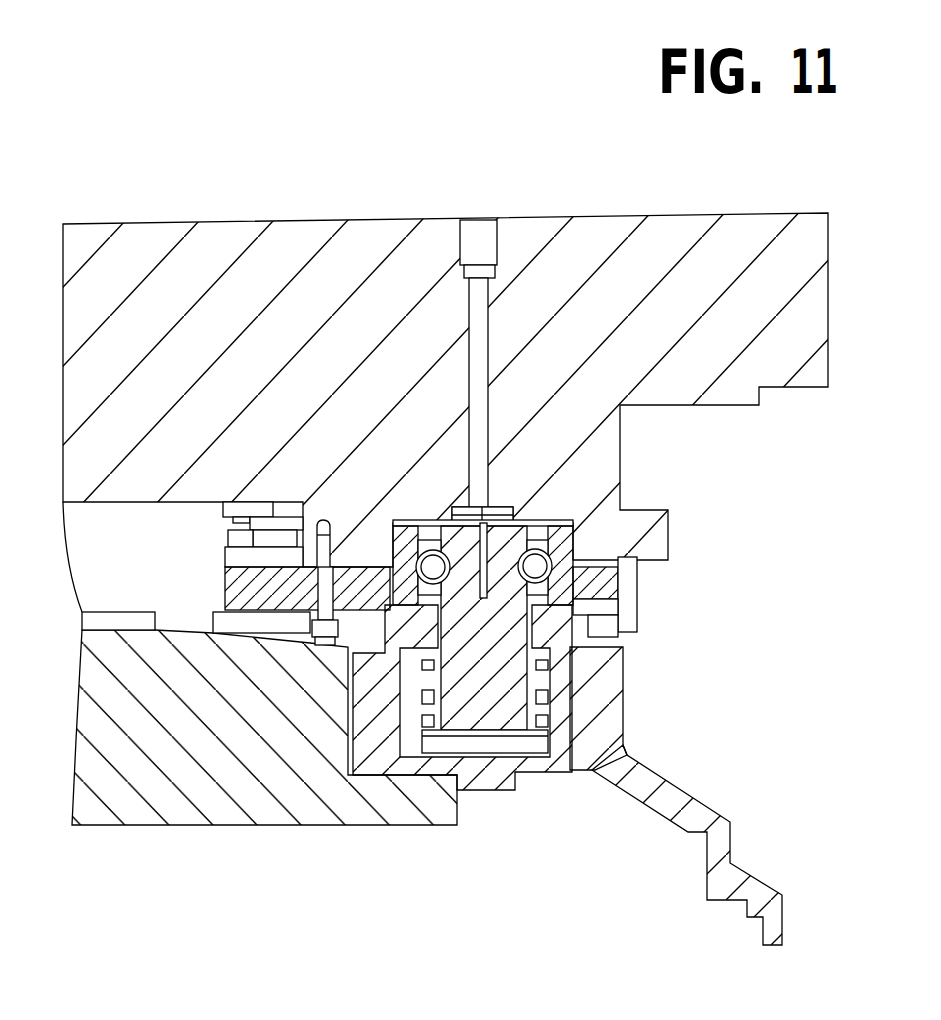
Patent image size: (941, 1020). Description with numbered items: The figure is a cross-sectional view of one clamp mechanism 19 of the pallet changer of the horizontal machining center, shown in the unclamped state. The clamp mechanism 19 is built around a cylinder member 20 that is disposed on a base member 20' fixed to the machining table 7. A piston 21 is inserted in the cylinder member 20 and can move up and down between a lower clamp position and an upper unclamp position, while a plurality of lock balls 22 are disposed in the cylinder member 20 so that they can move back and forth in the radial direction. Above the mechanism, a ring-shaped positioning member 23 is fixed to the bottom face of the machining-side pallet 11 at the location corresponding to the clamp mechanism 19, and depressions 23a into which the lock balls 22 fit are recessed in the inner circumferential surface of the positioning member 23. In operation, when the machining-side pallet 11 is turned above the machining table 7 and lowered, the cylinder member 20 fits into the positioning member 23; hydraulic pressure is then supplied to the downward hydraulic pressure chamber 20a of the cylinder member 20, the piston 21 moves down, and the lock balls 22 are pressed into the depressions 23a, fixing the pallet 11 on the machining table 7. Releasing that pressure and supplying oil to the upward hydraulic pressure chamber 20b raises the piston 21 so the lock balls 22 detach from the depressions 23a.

The machining-side pallet 11 is at (770, 206).
The machining table 7 is at (237, 826).
The clamp mechanism 19 is at (592, 501).
The cylinder member 20 is at (462, 733).
The downward hydraulic pressure chamber 20a is at (575, 687).
The upward hydraulic pressure chamber 20b is at (487, 733).
The base member 20' is at (677, 845).
The piston 21 is at (512, 747).
The lock ball 22 is at (400, 556).
The positioning member 23 is at (615, 590).
The depression 23a is at (405, 550).